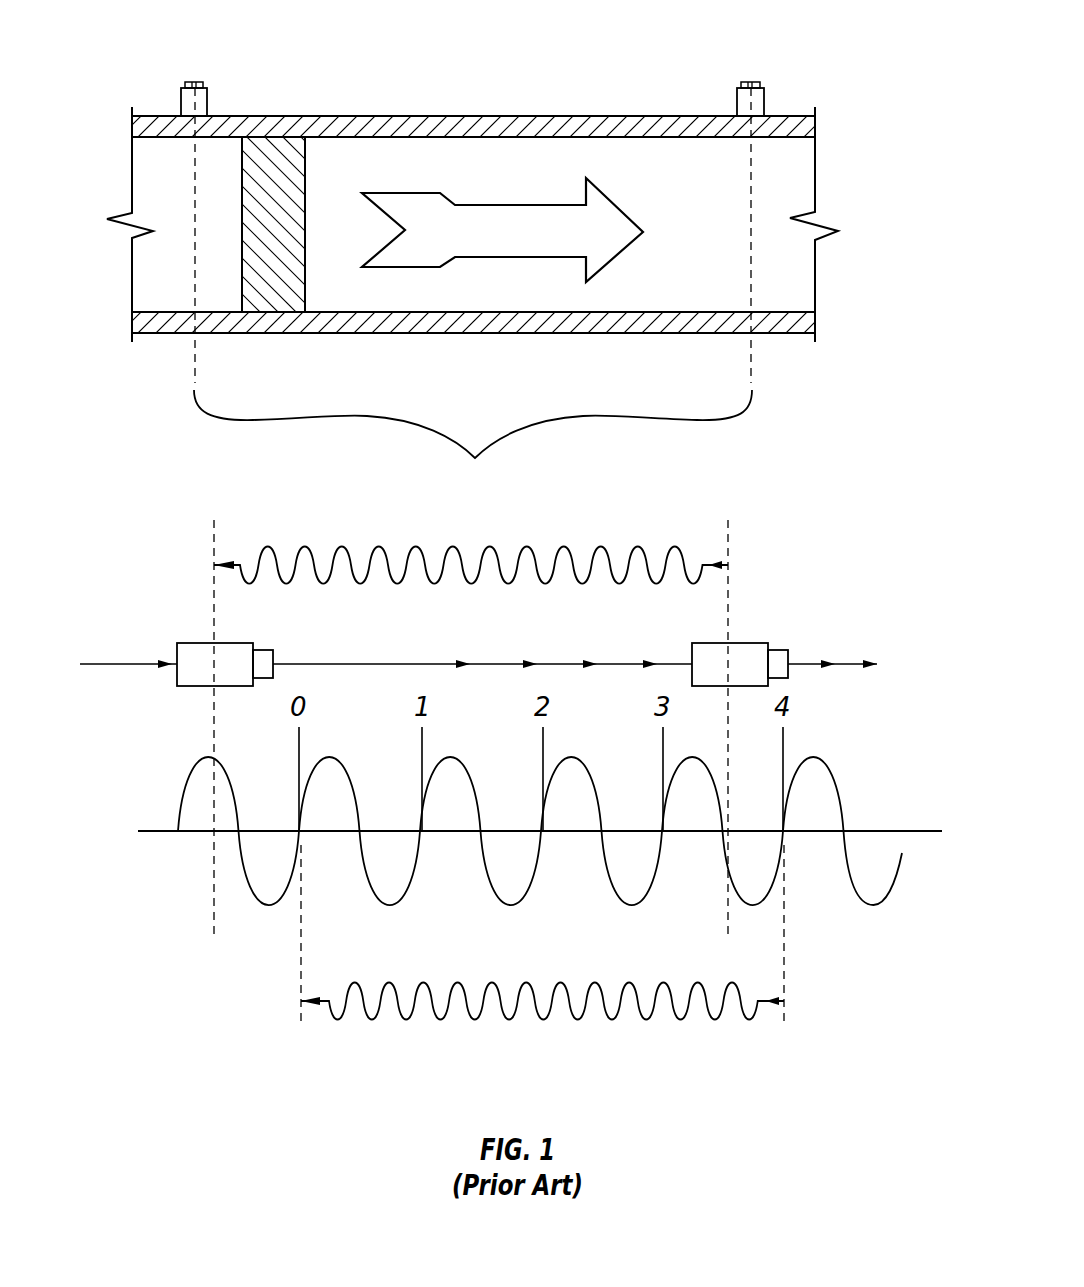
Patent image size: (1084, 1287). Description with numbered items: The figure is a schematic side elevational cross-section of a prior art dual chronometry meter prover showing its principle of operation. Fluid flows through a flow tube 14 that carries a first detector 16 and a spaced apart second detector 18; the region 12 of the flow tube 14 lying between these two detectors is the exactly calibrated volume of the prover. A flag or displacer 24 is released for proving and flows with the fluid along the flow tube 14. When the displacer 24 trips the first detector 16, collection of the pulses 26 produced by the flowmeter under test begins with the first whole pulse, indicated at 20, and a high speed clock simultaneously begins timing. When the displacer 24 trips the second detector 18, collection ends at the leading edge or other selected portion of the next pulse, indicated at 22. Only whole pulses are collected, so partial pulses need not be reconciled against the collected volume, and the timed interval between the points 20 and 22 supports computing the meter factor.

The region 12 is at (473, 442).
The flow tube 14 is at (585, 125).
The first detector 16 is at (180, 102).
The second detector 18 is at (765, 102).
The first whole pulse 20 is at (300, 972).
The leading edge of first pulse 22 is at (785, 972).
The displacer 24 is at (273, 175).
The pulses 26 is at (182, 798).